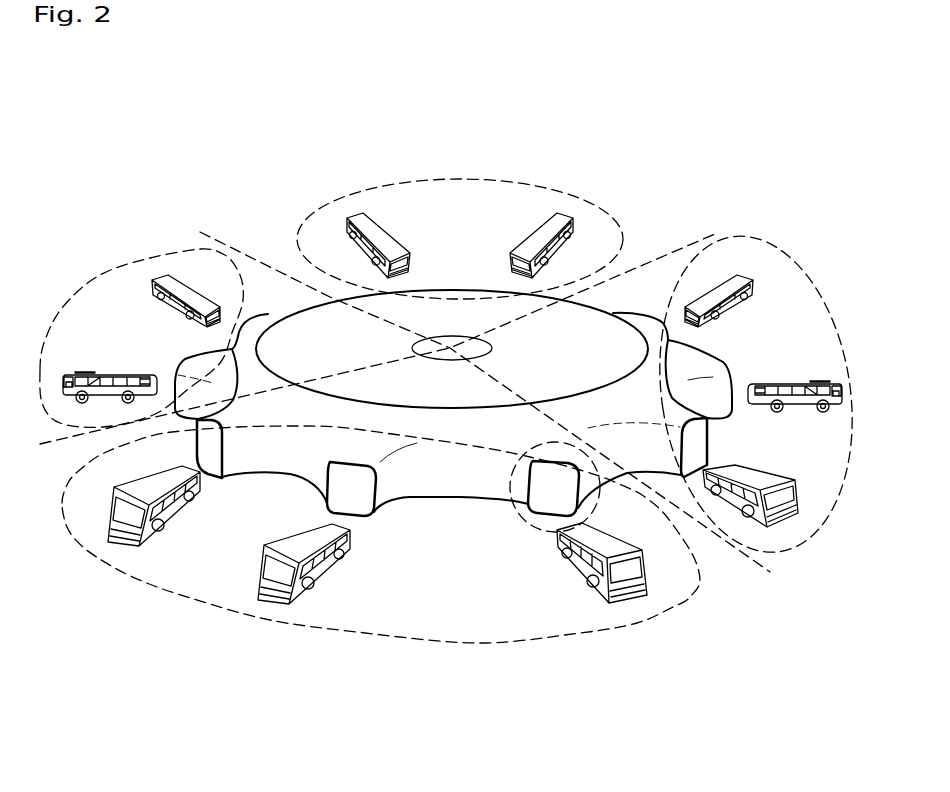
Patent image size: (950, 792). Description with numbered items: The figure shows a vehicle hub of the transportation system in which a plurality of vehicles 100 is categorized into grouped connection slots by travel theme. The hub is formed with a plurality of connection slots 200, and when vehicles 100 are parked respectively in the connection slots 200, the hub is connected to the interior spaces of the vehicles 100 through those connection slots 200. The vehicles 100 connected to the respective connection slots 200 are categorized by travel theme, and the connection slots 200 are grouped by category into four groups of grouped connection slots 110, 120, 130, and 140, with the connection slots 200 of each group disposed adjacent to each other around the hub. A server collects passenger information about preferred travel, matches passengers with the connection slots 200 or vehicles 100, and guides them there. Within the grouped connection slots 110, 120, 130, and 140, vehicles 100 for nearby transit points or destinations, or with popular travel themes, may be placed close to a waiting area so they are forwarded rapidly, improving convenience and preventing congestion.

The vehicle 100 is at (633, 590).
The grouped connection slots 110 is at (353, 633).
The grouped connection slots 120 is at (767, 247).
The grouped connection slots 130 is at (517, 179).
The grouped connection slots 140 is at (157, 256).
The connection slot 200 is at (531, 528).